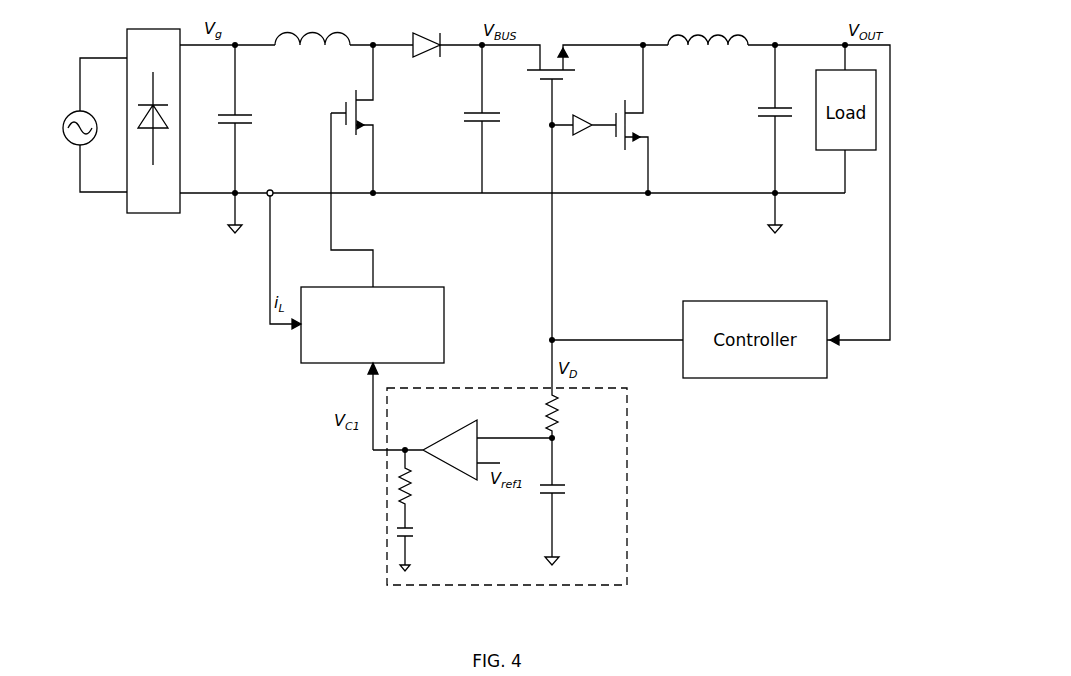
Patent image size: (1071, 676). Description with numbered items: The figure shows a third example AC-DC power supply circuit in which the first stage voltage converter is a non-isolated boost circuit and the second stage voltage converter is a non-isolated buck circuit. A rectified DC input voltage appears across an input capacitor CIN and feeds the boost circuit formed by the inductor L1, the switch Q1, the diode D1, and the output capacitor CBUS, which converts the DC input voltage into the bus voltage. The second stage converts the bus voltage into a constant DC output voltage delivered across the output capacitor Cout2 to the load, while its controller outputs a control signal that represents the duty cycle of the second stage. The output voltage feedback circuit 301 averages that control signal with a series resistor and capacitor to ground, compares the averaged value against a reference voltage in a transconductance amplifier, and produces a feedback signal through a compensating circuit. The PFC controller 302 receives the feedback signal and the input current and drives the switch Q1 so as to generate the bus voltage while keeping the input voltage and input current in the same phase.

The output voltage feedback circuit 301 is at (497, 462).
The PFC controller 302 is at (372, 325).
The switch Q1 is at (365, 119).
The diode D1 is at (426, 31).
The inductor L1 is at (312, 27).
The input capacitor CIN is at (245, 135).
The output capacitor CBUS is at (467, 119).
The output capacitor Cout2 is at (763, 135).